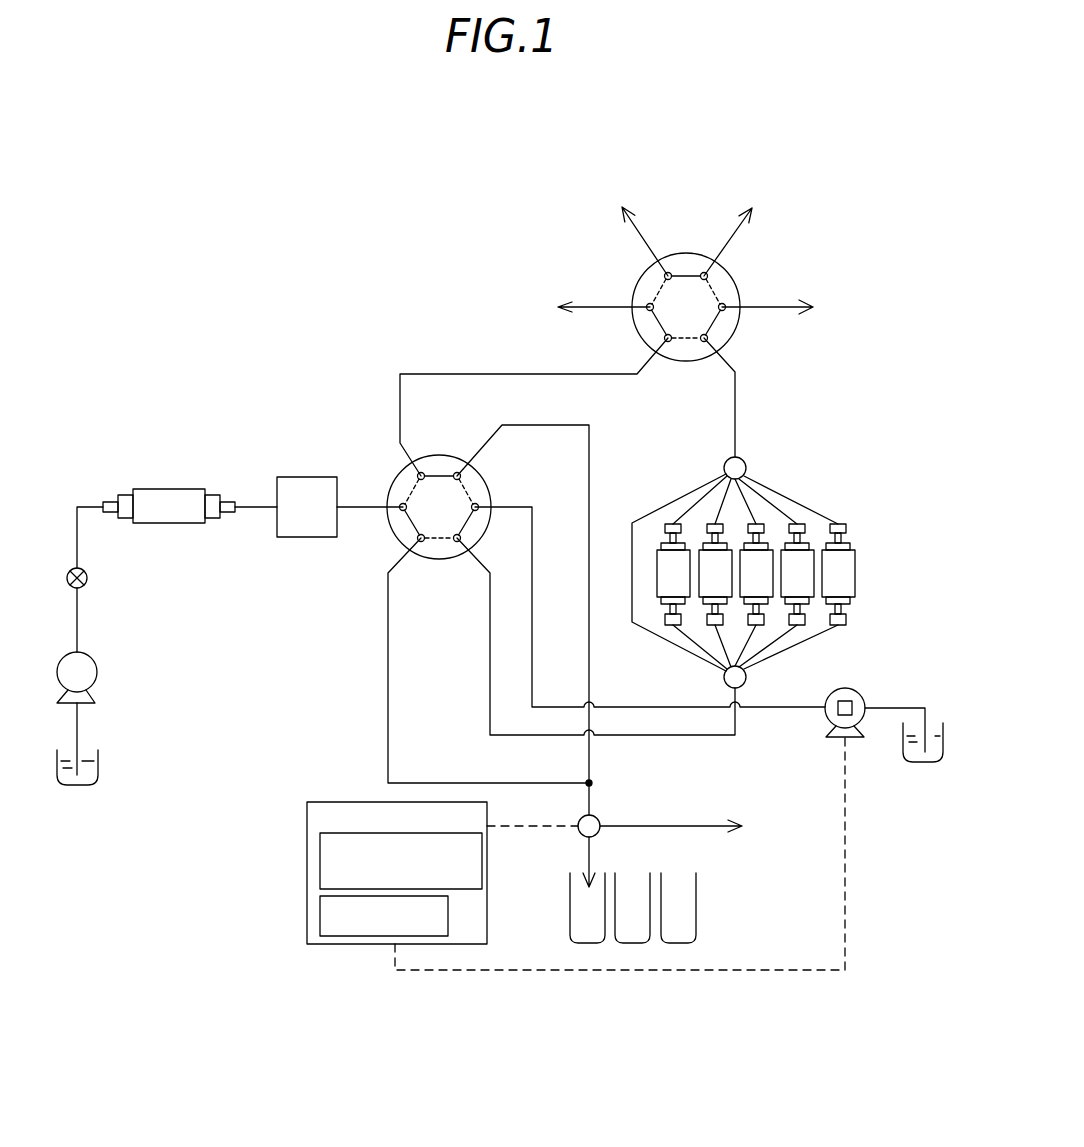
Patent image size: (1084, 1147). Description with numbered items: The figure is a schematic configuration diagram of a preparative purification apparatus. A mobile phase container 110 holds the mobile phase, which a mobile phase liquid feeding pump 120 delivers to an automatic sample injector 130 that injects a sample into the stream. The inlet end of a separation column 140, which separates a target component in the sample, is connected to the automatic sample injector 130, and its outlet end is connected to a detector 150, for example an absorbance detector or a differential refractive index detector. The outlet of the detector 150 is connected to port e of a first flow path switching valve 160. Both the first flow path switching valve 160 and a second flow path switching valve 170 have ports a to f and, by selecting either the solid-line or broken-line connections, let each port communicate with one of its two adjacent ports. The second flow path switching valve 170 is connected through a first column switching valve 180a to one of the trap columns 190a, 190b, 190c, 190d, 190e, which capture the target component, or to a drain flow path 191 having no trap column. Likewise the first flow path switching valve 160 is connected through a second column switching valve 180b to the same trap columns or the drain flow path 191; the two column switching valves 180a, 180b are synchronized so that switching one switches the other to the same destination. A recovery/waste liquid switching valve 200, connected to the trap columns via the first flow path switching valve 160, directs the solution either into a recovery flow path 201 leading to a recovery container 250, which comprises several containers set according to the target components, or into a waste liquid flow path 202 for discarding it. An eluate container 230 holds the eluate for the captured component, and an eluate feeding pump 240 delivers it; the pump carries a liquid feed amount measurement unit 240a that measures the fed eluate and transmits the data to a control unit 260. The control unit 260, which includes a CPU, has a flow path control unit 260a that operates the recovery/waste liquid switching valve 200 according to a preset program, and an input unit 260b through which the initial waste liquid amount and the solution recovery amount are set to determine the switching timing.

The mobile phase container 110 is at (75, 787).
The mobile phase liquid feeding pump 120 is at (97, 672).
The automatic sample injector 130 is at (88, 578).
The separation column 140 is at (155, 489).
The detector 150 is at (287, 477).
The first flow path switching valve 160 is at (439, 559).
The second flow path switching valve 170 is at (686, 361).
The first column switching valve 180a is at (755, 446).
The second column switching valve 180b is at (746, 684).
The trap column 190a is at (667, 622).
The trap column 190b is at (707, 625).
The trap column 190c is at (767, 518).
The trap column 190d is at (803, 520).
The trap column 190e is at (847, 528).
The drain flow path 191 is at (665, 505).
The recovery/waste liquid switching valve 200 is at (598, 817).
The recovery flow path 201 is at (591, 851).
The waste liquid flow path 202 is at (707, 824).
The eluate container 230 is at (918, 764).
The eluate feeding pump 240 is at (860, 693).
The liquid feed amount measurement unit 240a is at (828, 724).
The recovery container 250 is at (569, 911).
The control unit 260 is at (306, 827).
The flow path control unit 260a is at (320, 868).
The input unit 260b is at (320, 915).